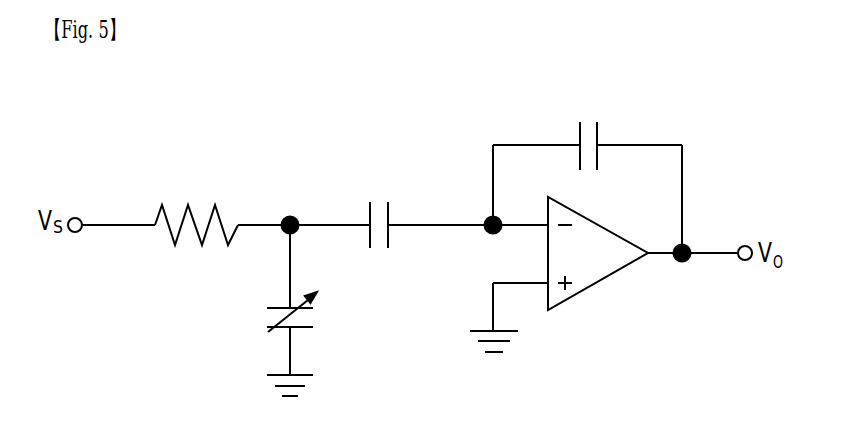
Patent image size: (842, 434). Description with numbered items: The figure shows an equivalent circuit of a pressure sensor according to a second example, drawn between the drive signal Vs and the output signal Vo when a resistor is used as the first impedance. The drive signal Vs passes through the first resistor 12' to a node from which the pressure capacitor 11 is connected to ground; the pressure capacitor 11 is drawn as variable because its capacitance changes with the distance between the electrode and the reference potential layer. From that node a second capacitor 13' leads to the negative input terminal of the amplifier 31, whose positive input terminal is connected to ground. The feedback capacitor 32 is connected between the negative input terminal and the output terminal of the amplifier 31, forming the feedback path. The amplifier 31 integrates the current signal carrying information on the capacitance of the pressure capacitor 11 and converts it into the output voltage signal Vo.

The resistor R1 12' is at (175, 192).
The capacitor C2 13' is at (354, 200).
The pressure capacitor 11 is at (318, 335).
The feedback capacitor 32 is at (592, 133).
The amplifier 31 is at (600, 285).